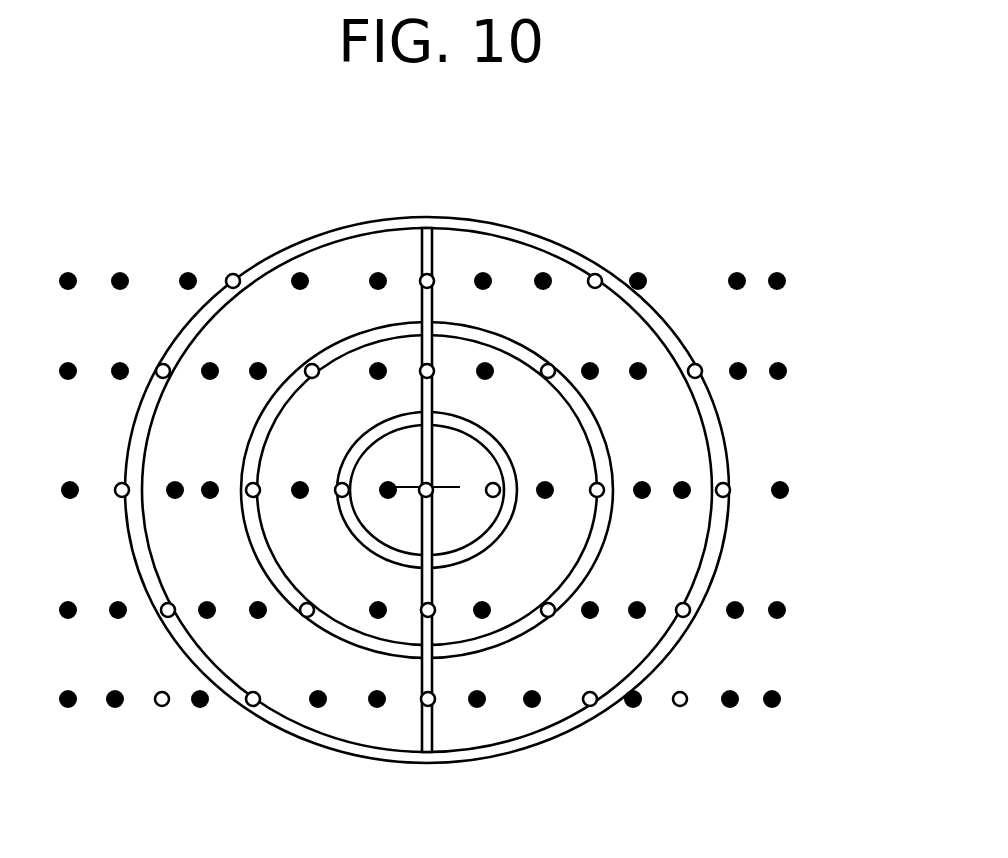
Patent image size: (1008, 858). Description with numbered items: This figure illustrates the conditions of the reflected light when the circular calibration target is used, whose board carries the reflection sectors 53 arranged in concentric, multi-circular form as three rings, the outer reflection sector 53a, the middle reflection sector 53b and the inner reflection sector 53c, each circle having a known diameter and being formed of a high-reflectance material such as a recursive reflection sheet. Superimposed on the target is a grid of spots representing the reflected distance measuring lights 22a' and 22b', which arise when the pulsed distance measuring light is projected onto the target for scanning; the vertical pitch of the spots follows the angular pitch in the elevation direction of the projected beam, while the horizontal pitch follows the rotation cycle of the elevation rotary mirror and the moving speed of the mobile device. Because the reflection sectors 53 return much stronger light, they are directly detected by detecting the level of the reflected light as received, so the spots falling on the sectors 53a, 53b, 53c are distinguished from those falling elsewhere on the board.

The reflection sectors 53 is at (495, 432).
The reflection sector 53a is at (729, 458).
The reflection sector 53b is at (652, 435).
The reflection sector 53c is at (508, 463).
The reflected distance measuring light 22a' is at (422, 419).
The reflected distance measuring light 22b' is at (424, 432).